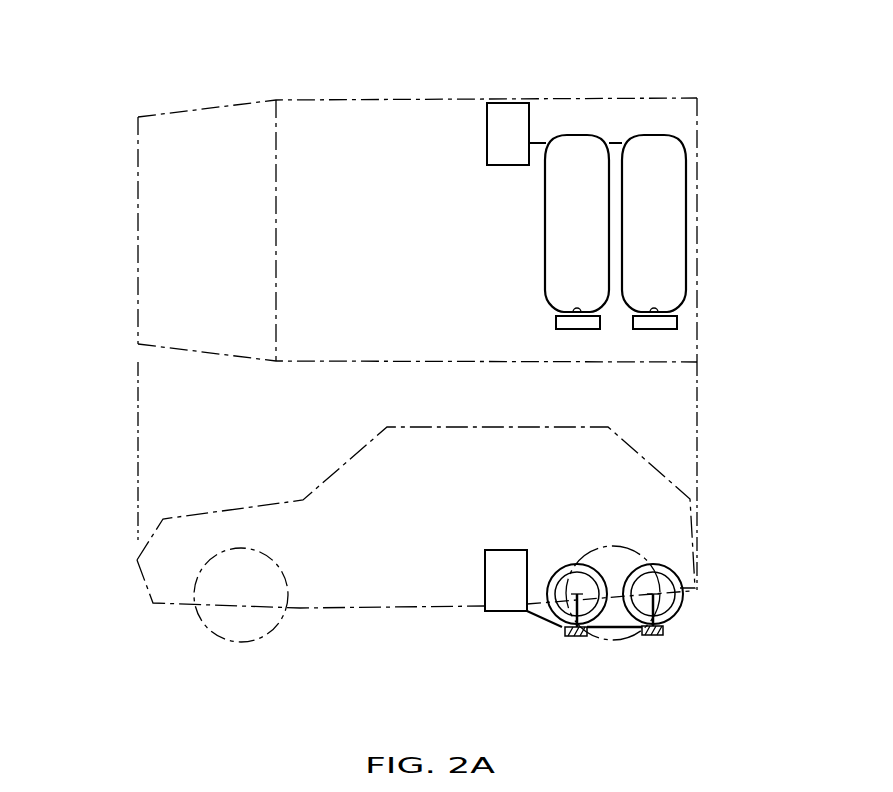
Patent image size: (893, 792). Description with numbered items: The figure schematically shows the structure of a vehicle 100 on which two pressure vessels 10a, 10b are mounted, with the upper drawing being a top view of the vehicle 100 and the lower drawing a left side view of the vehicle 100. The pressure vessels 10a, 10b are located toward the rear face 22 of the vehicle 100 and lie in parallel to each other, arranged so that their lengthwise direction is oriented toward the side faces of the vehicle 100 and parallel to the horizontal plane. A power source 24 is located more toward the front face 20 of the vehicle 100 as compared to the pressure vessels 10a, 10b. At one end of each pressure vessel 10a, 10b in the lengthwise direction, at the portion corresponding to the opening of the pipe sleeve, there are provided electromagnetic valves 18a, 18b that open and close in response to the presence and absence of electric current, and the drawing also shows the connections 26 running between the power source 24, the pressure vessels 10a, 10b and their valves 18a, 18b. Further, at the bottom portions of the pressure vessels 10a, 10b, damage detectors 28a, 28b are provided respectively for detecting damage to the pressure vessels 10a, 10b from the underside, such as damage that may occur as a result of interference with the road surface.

The vehicle 100 is at (219, 80).
The front face 20 is at (138, 210).
The rear face 22 is at (697, 215).
The power source 24 is at (506, 102).
The pressure vessel 10a is at (654, 134).
The pressure vessel 10b is at (576, 134).
The pipe 26 is at (617, 142).
The electromagnetic valve 18a is at (641, 330).
The electromagnetic valve 18b is at (563, 330).
The damage detector 28a is at (653, 637).
The damage detector 28b is at (578, 637).